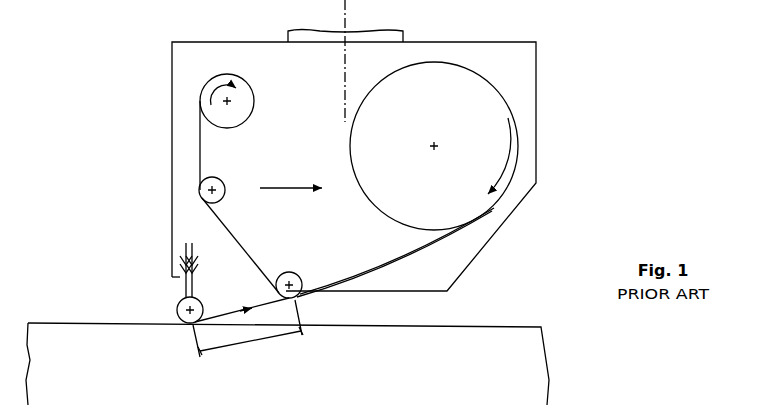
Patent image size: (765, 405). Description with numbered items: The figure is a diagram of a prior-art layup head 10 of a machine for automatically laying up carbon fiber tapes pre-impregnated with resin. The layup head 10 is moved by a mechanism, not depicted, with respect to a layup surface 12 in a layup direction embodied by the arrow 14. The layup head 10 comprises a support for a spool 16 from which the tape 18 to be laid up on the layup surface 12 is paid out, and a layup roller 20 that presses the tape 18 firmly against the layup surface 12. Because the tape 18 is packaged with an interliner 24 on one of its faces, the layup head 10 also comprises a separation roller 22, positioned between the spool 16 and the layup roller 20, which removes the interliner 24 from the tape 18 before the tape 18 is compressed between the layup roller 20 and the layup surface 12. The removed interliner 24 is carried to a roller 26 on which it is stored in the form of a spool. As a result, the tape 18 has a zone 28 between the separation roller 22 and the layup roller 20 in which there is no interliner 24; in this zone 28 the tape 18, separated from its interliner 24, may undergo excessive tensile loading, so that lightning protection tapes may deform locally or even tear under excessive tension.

The layup head 10 is at (104, 78).
The layup surface 12 is at (492, 325).
The arrow 14 is at (278, 187).
The spool 16 is at (468, 80).
The tape 18 is at (70, 322).
The layup roller 20 is at (175, 302).
The separation roller 22 is at (301, 272).
The interliner 24 is at (238, 240).
The roller 26 is at (250, 92).
The zone 28 is at (248, 335).